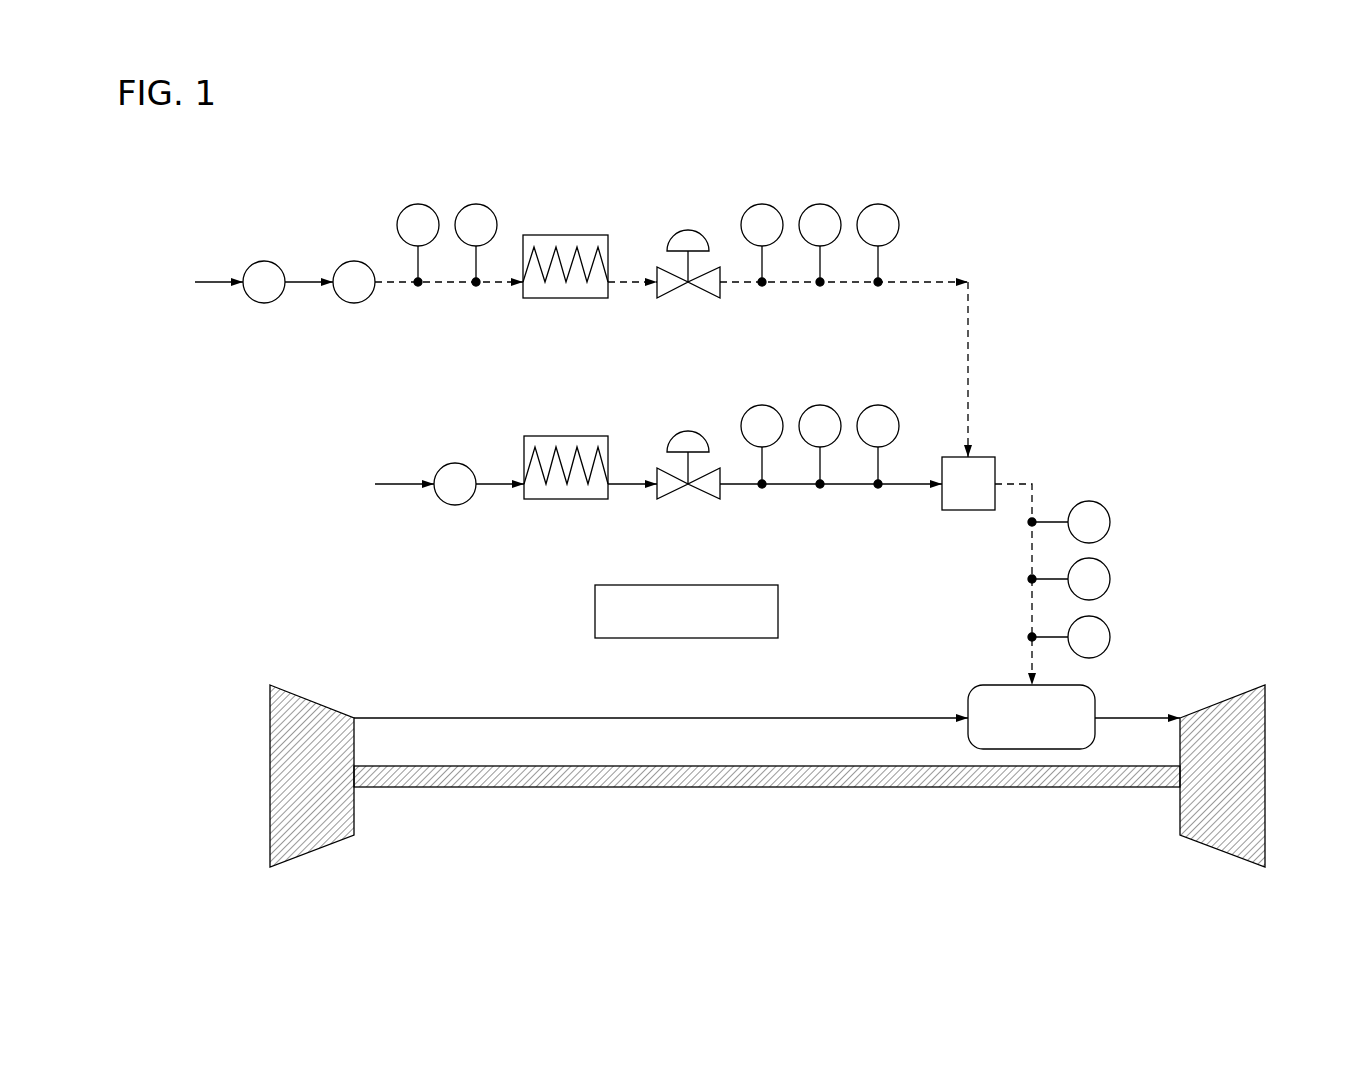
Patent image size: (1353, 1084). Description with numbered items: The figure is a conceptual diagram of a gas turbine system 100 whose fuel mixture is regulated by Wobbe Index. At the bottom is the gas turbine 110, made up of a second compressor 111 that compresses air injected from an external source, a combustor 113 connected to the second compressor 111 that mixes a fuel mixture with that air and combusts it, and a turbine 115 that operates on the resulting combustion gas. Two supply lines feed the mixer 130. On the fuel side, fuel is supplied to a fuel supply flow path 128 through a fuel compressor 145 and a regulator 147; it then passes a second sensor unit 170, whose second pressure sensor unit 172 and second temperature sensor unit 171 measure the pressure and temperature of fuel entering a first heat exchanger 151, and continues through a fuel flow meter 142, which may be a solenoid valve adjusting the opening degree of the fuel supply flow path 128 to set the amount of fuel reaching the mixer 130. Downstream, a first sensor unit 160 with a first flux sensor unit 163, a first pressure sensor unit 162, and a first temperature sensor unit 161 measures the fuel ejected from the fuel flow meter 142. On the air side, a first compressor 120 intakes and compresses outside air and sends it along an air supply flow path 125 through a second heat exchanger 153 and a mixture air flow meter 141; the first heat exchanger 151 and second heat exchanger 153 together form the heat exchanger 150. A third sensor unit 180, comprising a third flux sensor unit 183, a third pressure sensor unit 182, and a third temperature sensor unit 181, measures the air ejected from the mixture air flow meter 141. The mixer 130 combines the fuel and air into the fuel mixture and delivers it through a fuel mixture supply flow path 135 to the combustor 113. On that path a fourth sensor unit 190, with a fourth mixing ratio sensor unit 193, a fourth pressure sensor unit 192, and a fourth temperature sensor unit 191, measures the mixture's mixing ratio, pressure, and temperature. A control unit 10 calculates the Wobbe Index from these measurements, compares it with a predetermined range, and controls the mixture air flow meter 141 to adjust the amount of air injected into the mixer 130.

The gas turbine system 100 is at (1122, 209).
The control unit 10 is at (778, 611).
The gas turbine 110 is at (368, 867).
The second compressor 111 is at (354, 803).
The combustor 113 is at (1031, 749).
The turbine 115 is at (1180, 803).
The first compressor 120 is at (455, 463).
The air supply flow path 125 is at (910, 486).
The fuel supply flow path 128 is at (932, 277).
The mixer 130 is at (995, 457).
The fuel mixture supply flow path 135 is at (1032, 660).
The mixture air flow meter 141 is at (688, 432).
The fuel flow meter 142 is at (688, 230).
The fuel compressor 145 is at (264, 261).
The regulator 147 is at (354, 261).
The heat exchanger 150 is at (592, 330).
The first heat exchanger 151 is at (565, 300).
The second heat exchanger 153 is at (566, 436).
The first sensor unit 160 is at (740, 145).
The first temperature sensor unit 161 is at (878, 203).
The first pressure sensor unit 162 is at (820, 203).
The first flux sensor unit 163 is at (762, 203).
The second sensor unit 170 is at (400, 143).
The second temperature sensor unit 171 is at (476, 203).
The second pressure sensor unit 172 is at (418, 203).
The third sensor unit 180 is at (740, 346).
The third temperature sensor unit 181 is at (878, 405).
The third pressure sensor unit 182 is at (820, 405).
The third flux sensor unit 183 is at (762, 405).
The fourth sensor unit 190 is at (1185, 513).
The fourth temperature sensor unit 191 is at (1110, 637).
The fourth pressure sensor unit 192 is at (1110, 579).
The fourth mixing ratio sensor unit 193 is at (1110, 522).